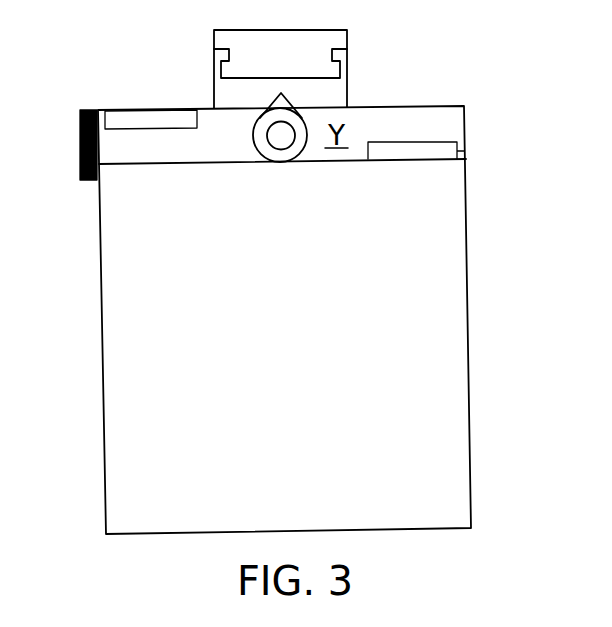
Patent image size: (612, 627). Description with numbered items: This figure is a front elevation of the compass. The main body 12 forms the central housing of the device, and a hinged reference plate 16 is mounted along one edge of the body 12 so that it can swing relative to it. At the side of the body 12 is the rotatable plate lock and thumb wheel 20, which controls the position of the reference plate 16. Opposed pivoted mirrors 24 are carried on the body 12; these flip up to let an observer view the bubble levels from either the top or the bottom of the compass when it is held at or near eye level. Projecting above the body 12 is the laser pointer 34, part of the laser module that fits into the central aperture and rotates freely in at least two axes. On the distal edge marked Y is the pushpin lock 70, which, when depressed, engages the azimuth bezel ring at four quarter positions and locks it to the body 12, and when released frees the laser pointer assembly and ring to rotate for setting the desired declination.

The main body 12 is at (455, 122).
The hinged reference plate 16 is at (300, 358).
The rotatable plate lock and thumb wheel 20 is at (85, 110).
The opposed pivoted mirrors 24 is at (131, 110).
The laser pointer 34 is at (348, 62).
The pushpin lock 70 is at (268, 132).